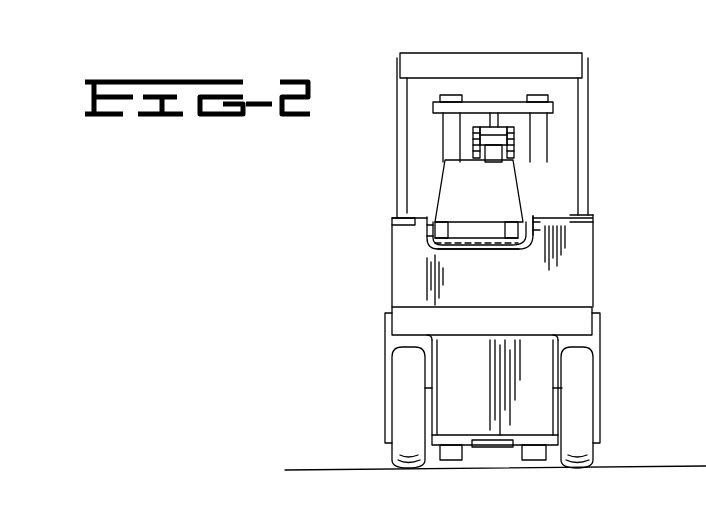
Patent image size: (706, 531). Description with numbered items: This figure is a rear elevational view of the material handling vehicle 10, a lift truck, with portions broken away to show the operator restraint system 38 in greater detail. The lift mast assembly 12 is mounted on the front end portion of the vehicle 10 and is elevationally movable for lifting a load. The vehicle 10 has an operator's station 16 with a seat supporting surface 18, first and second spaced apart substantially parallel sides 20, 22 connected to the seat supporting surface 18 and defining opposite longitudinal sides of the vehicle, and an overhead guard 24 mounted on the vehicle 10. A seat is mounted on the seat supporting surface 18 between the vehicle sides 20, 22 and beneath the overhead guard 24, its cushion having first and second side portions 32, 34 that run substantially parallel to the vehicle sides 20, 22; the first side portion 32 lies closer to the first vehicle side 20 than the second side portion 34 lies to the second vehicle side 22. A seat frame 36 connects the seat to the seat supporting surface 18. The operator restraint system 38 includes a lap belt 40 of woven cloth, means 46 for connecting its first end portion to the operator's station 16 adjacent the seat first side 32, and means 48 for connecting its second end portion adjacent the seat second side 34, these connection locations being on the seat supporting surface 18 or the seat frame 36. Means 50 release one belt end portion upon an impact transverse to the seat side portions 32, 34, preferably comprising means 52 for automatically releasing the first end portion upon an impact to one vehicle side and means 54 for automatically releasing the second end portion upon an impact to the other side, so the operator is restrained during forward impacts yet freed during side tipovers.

The material handling vehicle 10 is at (296, 320).
The lift mast assembly 12 is at (552, 98).
The operator's station 16 is at (596, 118).
The seat supporting surface 18 is at (498, 248).
The first side 20 is at (398, 275).
The second side 22 is at (594, 265).
The overhead guard 24 is at (580, 53).
The first side portion of seat cushion 32 is at (430, 218).
The second side portion of seat cushion 34 is at (536, 215).
The seat frame 36 is at (505, 228).
The operator restraint system 38 is at (490, 91).
The lap belt 40 is at (447, 175).
The means for connecting the lap belt first end portion 46 is at (415, 228).
The means for connecting the lap belt second end portion 48 is at (548, 221).
The means for releasing 50 is at (488, 274).
The means for automatically releasing the lap belt first end portion 52 is at (413, 240).
The means for automatically releasing the lap belt second end portion 54 is at (560, 238).